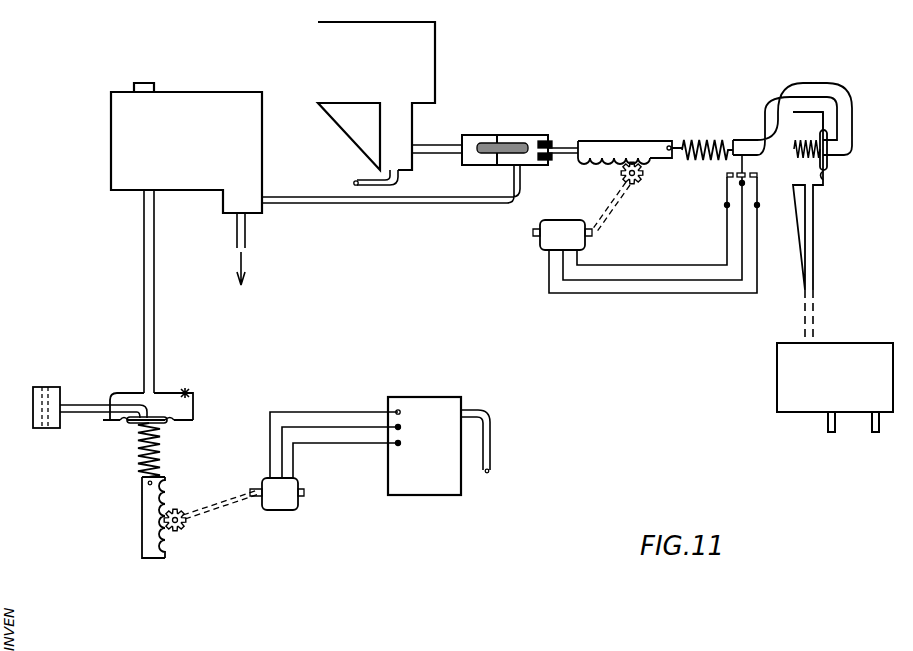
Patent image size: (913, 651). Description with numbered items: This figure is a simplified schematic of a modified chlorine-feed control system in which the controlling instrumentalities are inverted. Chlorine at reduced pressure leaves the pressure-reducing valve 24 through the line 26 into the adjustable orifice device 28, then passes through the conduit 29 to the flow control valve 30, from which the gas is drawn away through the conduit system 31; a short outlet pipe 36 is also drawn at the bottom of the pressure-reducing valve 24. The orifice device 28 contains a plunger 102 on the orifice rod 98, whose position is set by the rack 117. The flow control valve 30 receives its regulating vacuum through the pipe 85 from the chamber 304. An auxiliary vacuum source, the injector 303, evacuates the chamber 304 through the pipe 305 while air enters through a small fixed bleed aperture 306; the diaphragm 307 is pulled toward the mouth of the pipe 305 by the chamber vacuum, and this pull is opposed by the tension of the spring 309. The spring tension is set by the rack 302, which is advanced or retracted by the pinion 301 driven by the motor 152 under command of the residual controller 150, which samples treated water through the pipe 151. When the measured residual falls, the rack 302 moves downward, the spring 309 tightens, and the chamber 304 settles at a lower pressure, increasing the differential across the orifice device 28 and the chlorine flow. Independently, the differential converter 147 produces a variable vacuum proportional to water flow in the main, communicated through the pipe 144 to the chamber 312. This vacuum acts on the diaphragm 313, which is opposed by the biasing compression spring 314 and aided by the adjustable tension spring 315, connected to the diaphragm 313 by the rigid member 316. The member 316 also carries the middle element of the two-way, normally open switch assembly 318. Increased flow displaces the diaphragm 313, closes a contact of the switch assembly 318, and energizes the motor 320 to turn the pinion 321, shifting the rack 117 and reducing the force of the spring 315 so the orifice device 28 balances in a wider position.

The pressure-reducing valve 24 is at (420, 70).
The line 26 is at (440, 155).
The adjustable orifice device 28 is at (482, 135).
The conduit 29 is at (370, 204).
The flow control valve 30 is at (124, 147).
The conduit system 31 is at (249, 235).
The outlet pipe 36 is at (361, 179).
The pipe 85 is at (144, 256).
The orifice rod 98 is at (527, 150).
The valve plunger 102 is at (486, 154).
The rack 117 is at (608, 141).
The pipe 144 is at (816, 270).
The differential converter 147 is at (856, 345).
The residual controller 150 is at (427, 496).
The pipe 151 is at (492, 454).
The motor 152 is at (275, 510).
The pinion 301 is at (183, 528).
The rack 302 is at (142, 519).
The injector 303 is at (64, 430).
The chamber 304 is at (122, 392).
The pipe 305 is at (71, 403).
The bleed aperture 306 is at (186, 391).
The diaphragm 307 is at (172, 422).
The spring 309 is at (161, 462).
The chamber 312 is at (818, 187).
The diaphragm 313 is at (827, 175).
The biasing compression spring 314 is at (828, 167).
The adjustable tension spring 315 is at (698, 140).
The rigid member 316 is at (792, 84).
The switch assembly 318 is at (726, 178).
The motor 320 is at (553, 243).
The pinion 321 is at (634, 183).